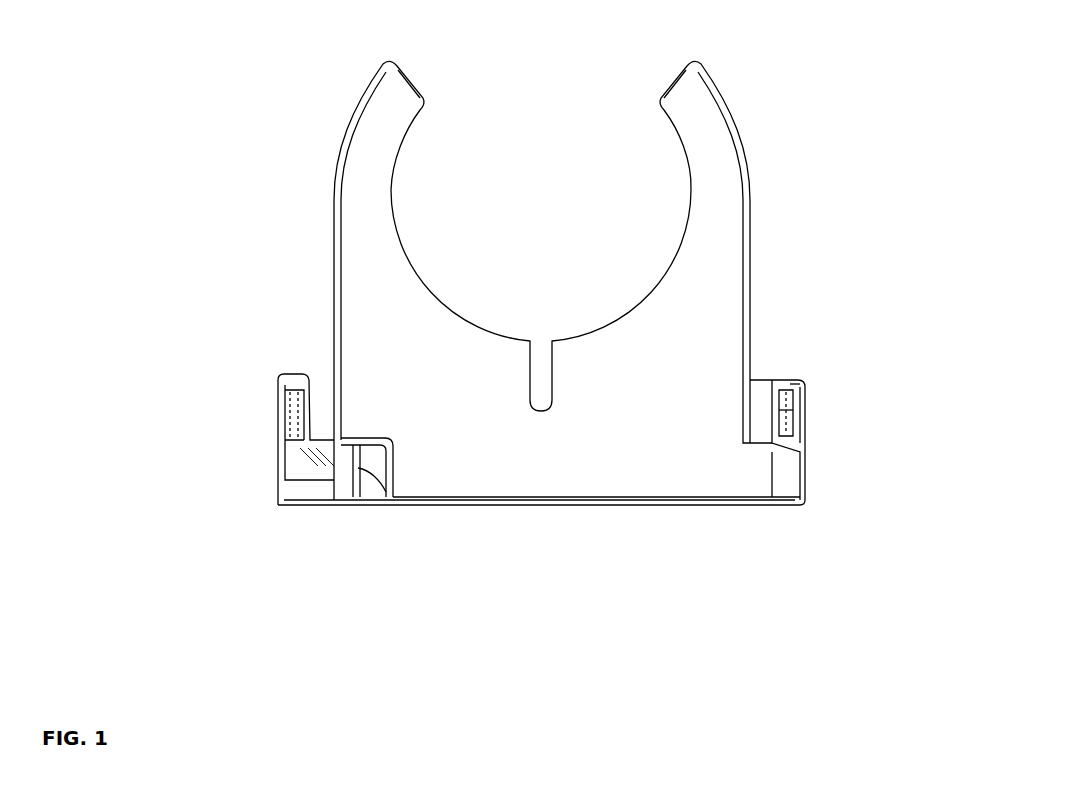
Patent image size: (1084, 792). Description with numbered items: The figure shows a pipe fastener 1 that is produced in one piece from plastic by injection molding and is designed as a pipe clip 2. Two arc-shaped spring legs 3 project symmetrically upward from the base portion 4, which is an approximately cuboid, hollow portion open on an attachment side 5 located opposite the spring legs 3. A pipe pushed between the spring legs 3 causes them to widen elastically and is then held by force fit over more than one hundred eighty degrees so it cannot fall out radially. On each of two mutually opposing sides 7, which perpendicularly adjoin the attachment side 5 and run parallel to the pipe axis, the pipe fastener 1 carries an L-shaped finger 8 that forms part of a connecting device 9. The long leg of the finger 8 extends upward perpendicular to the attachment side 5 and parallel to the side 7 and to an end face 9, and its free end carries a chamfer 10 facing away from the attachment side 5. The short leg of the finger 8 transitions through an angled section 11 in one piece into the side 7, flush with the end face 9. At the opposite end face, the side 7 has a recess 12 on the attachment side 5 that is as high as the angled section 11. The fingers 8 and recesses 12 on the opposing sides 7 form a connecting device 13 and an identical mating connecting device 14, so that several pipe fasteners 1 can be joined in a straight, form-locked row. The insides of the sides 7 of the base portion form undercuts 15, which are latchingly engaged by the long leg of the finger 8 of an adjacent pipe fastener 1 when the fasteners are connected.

The pipe fastener 1 is at (519, 321).
The pipe clip 2 is at (258, 126).
The spring legs 3 is at (370, 188).
The base portion 4 is at (547, 478).
The attachment side 5 is at (597, 522).
The side 7 is at (748, 382).
The finger 8 is at (849, 440).
The end face 9 is at (668, 406).
The chamfer 10 is at (795, 385).
The angled section 11 is at (772, 473).
The recess 12 is at (372, 497).
The connecting device 13 is at (816, 412).
The mating connecting device 14 is at (266, 418).
The undercuts 15 is at (358, 468).